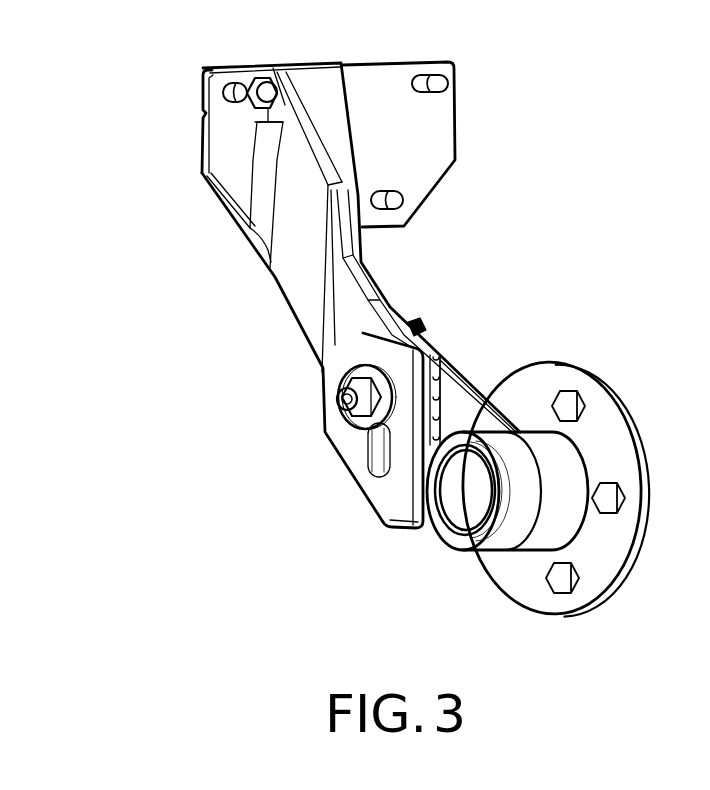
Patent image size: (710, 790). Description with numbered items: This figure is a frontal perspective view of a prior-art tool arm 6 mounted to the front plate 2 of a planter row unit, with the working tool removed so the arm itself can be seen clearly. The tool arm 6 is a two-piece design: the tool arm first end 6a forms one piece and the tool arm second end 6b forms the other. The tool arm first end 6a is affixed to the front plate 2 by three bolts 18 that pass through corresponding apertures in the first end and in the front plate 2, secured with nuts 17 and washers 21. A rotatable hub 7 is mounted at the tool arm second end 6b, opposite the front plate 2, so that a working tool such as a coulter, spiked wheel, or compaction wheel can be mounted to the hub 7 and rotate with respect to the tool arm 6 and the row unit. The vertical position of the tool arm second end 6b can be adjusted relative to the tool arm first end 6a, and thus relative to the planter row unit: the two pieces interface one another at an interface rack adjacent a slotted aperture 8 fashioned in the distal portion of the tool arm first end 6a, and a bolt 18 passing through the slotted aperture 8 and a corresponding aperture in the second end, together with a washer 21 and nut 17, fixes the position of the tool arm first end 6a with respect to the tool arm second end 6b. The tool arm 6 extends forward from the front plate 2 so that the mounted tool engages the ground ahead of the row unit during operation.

The front plate 2 is at (448, 122).
The tool arm 6 is at (297, 276).
The tool arm first end 6a is at (230, 132).
The tool arm second end 6b is at (397, 530).
The rotatable hub 7 is at (603, 443).
The slotted aperture 8 is at (376, 464).
The nut 17 is at (356, 380).
The bolt 18 is at (272, 70).
The washer 21 is at (370, 373).